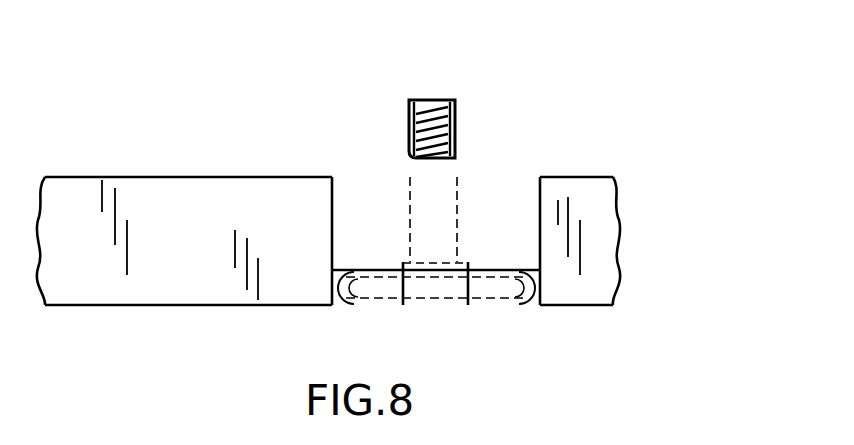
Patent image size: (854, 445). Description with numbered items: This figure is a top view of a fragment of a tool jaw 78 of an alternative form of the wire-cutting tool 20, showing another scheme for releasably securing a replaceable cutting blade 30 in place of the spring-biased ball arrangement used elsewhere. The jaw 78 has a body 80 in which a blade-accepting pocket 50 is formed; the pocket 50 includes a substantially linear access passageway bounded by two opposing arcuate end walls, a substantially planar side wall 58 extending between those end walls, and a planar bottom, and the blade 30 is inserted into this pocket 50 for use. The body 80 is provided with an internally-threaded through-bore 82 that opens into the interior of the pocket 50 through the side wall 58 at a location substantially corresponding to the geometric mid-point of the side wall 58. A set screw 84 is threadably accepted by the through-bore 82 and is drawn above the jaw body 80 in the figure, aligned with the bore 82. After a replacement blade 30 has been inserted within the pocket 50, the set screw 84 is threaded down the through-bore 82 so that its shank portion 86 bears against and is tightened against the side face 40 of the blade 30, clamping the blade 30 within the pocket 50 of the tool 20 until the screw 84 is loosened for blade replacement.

The tool 20 is at (572, 133).
The cutting blade 30 is at (387, 297).
The side face 40 is at (500, 250).
The blade-accepting pocket 50 is at (358, 275).
The side wall 58 is at (523, 293).
The tool jaw 78 is at (218, 208).
The body 80 is at (210, 290).
The internally-threaded through-bore 82 is at (413, 210).
The set screw 84 is at (455, 130).
The shank portion 86 is at (410, 130).